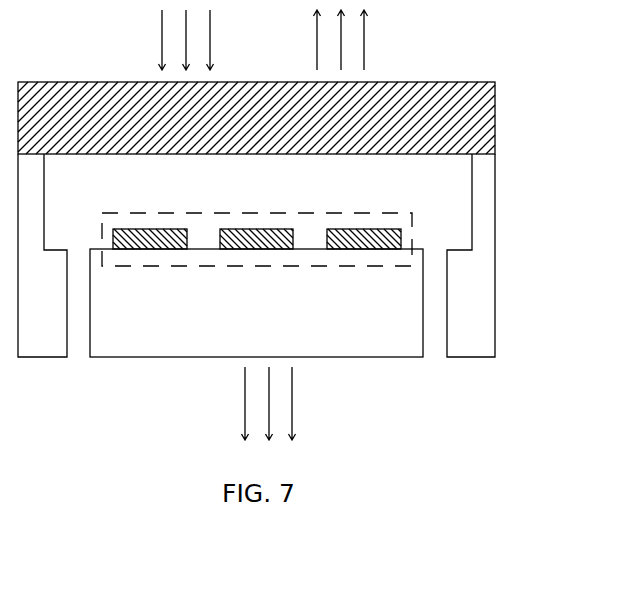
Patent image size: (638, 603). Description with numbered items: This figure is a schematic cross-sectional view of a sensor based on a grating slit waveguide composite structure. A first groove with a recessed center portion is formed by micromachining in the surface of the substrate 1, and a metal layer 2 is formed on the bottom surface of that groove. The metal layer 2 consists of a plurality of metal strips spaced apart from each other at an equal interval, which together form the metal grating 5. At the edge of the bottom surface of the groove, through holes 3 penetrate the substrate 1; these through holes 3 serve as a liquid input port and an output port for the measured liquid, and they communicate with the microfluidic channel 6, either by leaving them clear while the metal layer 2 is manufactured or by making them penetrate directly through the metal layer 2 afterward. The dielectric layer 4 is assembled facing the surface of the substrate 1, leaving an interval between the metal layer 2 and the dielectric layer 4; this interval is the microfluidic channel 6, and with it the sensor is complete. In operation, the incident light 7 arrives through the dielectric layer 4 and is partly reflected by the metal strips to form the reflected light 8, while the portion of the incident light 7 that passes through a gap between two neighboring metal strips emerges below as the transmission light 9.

The substrate 1 is at (140, 326).
The metal layer 2 is at (340, 237).
The through holes 3 is at (82, 326).
The dielectric layer 4 is at (106, 112).
The metal grating 5 is at (406, 240).
The microfluidic channel 6 is at (200, 199).
The incident light 7 is at (198, 40).
The reflected light 8 is at (353, 40).
The transmission light 9 is at (277, 403).